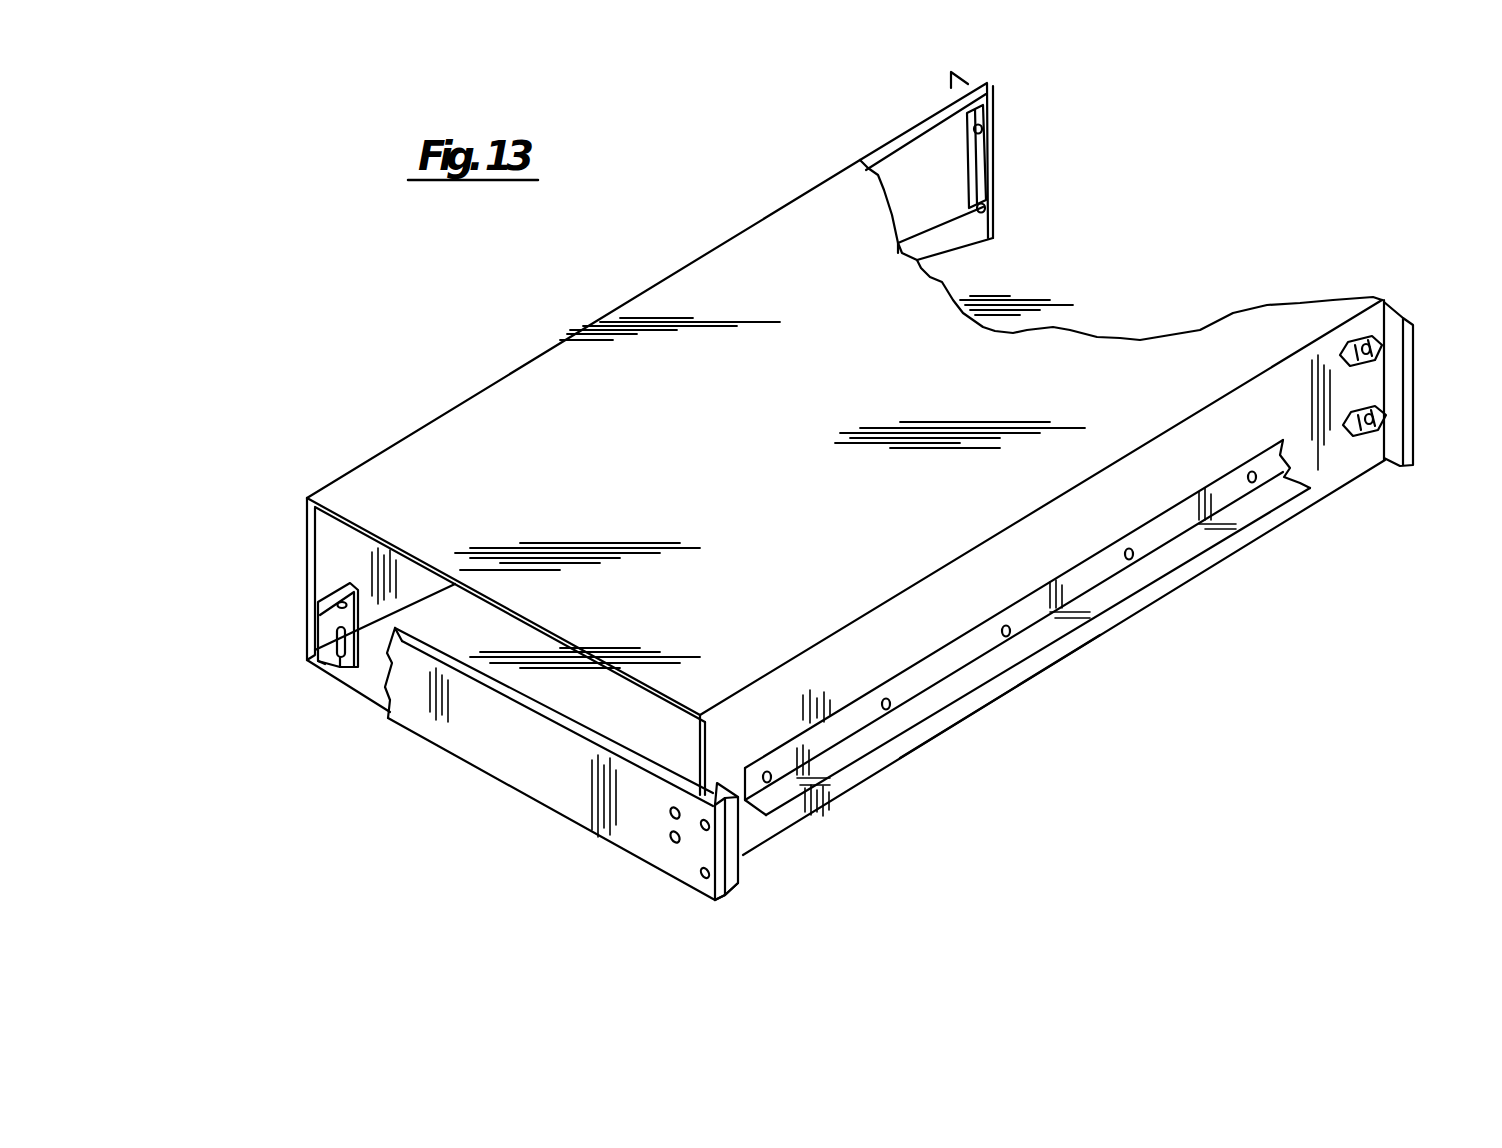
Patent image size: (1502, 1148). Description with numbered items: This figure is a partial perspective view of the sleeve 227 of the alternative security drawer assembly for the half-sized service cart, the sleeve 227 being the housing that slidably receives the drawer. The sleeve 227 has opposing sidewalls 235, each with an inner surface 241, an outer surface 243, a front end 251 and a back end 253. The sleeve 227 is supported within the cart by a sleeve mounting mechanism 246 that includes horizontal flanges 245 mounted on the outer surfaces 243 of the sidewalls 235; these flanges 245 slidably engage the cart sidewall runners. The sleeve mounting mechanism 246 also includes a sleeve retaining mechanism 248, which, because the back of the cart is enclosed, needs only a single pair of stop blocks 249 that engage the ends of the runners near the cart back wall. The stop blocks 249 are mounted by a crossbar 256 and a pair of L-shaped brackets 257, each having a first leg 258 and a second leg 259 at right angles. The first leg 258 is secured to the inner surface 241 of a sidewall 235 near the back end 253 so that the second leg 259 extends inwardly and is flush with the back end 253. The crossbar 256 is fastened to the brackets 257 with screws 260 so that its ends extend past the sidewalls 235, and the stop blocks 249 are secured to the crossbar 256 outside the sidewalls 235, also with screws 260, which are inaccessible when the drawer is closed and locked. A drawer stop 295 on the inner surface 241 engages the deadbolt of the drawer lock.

The sleeve 227 is at (520, 363).
The sidewall 235 is at (860, 670).
The inner surface 241 is at (950, 177).
The outer surface 243 is at (1022, 590).
The horizontal flange 245 is at (881, 735).
The sleeve mounting mechanism 246 is at (1009, 716).
The sleeve retaining mechanism 248 is at (746, 906).
The stop block 249 is at (737, 870).
The front end 251 is at (1395, 472).
The back end 253 is at (307, 490).
The crossbar 256 is at (517, 780).
The bracket 257 is at (323, 632).
The first leg 258 is at (337, 597).
The second leg 259 is at (347, 663).
The screws 260 is at (703, 875).
The drawer stop 295 is at (980, 166).